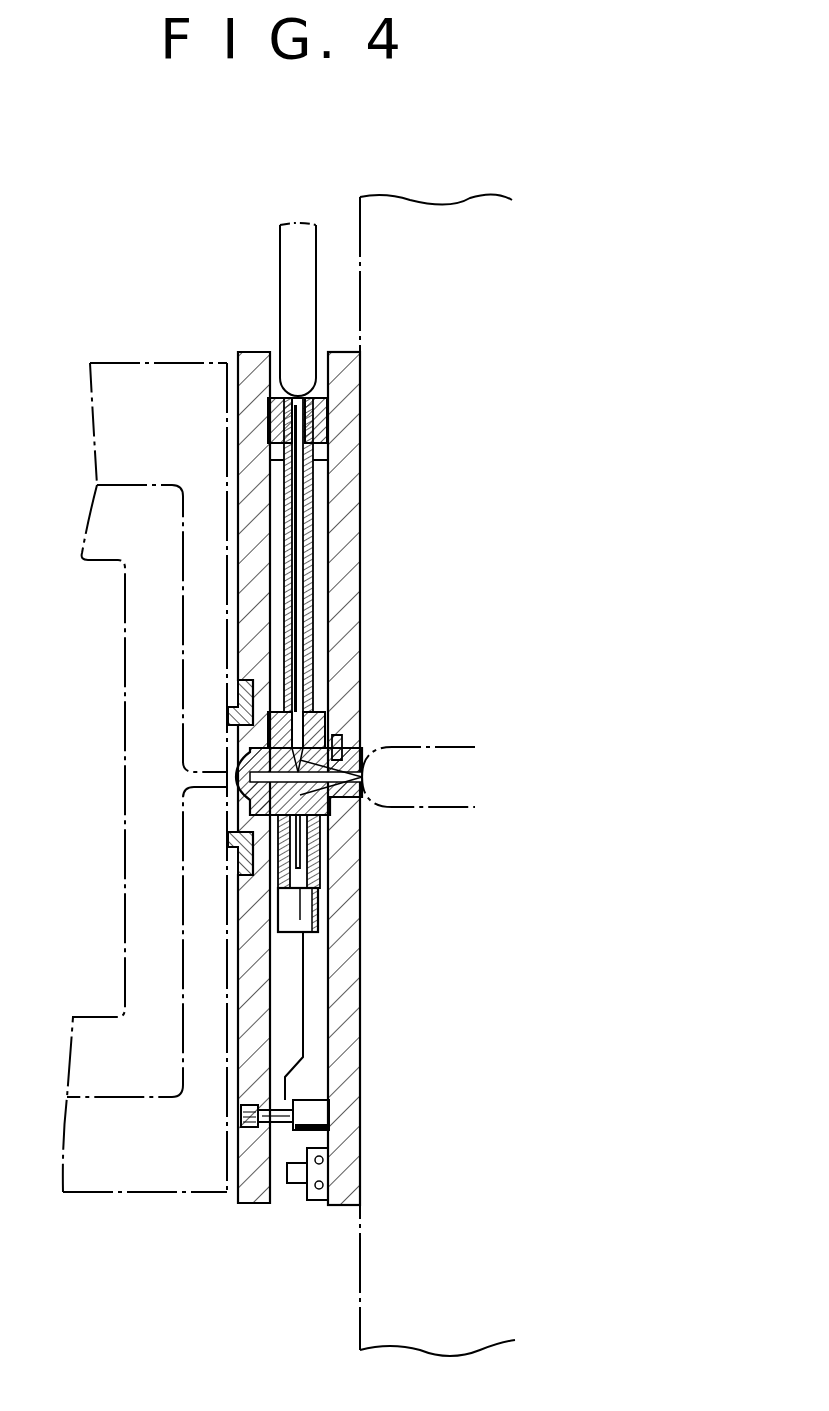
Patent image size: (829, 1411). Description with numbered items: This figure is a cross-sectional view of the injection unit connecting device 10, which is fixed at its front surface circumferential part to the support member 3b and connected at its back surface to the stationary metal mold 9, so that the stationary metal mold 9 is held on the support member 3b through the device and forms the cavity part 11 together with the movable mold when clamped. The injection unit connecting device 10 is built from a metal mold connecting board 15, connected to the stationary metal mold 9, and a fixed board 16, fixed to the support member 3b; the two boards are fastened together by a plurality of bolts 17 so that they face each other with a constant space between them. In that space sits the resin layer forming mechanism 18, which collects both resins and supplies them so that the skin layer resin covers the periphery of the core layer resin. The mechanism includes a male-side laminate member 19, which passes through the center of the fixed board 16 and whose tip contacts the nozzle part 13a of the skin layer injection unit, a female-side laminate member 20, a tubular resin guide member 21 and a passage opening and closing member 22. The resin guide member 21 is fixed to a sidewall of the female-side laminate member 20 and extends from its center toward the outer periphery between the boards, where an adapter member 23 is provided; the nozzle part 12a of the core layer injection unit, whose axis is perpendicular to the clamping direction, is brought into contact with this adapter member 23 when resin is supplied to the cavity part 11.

The support member 3b is at (446, 200).
The stationary metal mold 9 is at (128, 362).
The injection unit connecting device 10 is at (392, 340).
The cavity part 11 is at (152, 539).
The nozzle part 12a is at (284, 262).
The nozzle part 13a is at (442, 745).
The metal mold connecting board 15 is at (258, 348).
The fixed board 16 is at (352, 400).
The bolt 17 is at (325, 1112).
The resin layer forming mechanism 18 is at (353, 822).
The male-side laminate member 19 is at (352, 737).
The female-side laminate member 20 is at (240, 750).
The resin guide member 21 is at (315, 565).
The passage opening and closing member 22 is at (320, 905).
The adapter member 23 is at (328, 437).